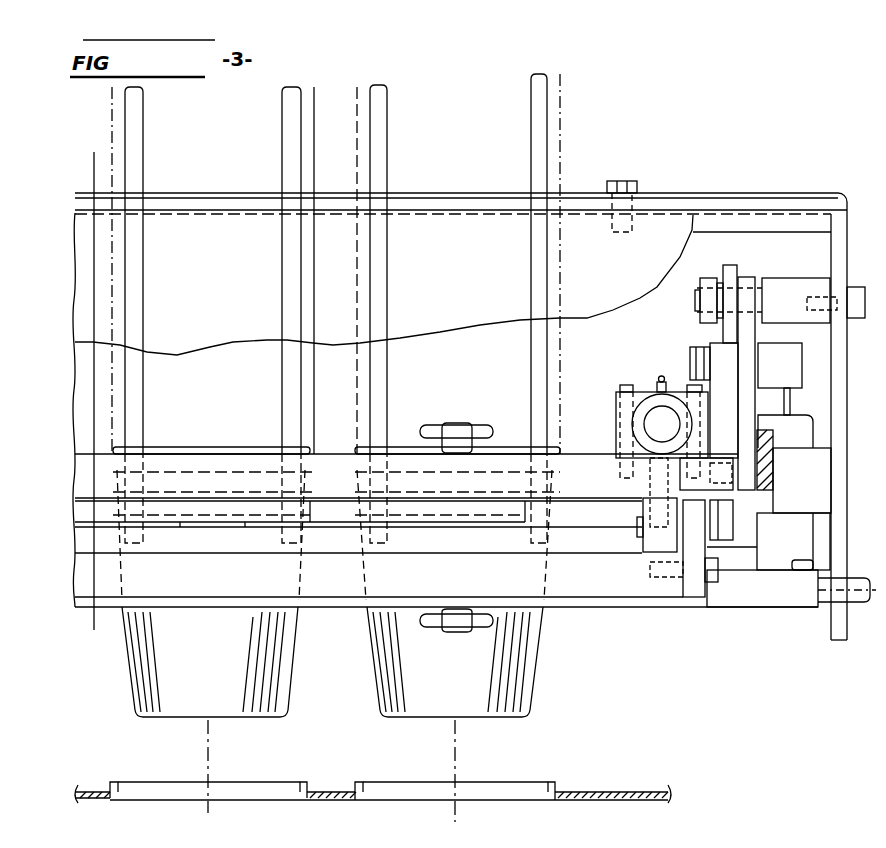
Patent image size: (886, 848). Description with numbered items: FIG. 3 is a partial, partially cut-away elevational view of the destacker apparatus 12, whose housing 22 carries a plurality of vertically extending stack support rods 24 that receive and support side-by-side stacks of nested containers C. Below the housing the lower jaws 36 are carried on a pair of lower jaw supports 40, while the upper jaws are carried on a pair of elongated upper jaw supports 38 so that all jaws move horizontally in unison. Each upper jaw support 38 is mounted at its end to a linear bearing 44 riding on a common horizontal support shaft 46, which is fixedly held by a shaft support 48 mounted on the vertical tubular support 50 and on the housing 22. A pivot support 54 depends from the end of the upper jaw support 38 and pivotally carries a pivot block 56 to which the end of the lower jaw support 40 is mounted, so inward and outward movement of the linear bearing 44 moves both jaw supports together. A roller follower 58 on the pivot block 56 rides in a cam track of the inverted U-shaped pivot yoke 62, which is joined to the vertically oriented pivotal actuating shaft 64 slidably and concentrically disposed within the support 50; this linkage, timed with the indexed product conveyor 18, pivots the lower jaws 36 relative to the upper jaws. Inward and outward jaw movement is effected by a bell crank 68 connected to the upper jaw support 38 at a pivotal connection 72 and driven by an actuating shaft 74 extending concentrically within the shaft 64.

The destacker apparatus 12 is at (707, 157).
The indexed product conveyor 18 is at (577, 793).
The housing 22 is at (762, 195).
The stack support rods 24 is at (143, 403).
The lower jaws 36 is at (245, 523).
The upper jaw supports 38 is at (605, 488).
The lower jaw supports 40 is at (568, 583).
The linear bearing 44 is at (616, 417).
The horizontal support shaft 46 is at (655, 420).
The shaft support 48 is at (815, 458).
The vertical tubular support 50 is at (803, 543).
The pivot support 54 is at (648, 543).
The pivot block 56 is at (697, 592).
The roller follower 58 is at (723, 510).
The pivot yoke 62 is at (723, 348).
The pivotal actuating shaft 64 is at (772, 403).
The bell cranks 68 is at (735, 272).
The pivotal connection 72 is at (772, 480).
The actuating shaft 74 is at (767, 333).
The nested containers C is at (360, 690).